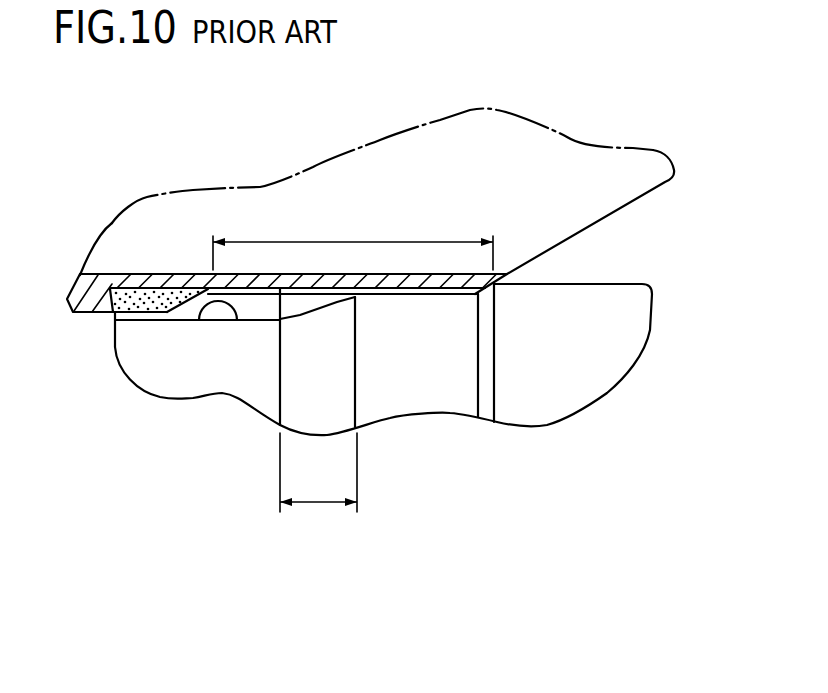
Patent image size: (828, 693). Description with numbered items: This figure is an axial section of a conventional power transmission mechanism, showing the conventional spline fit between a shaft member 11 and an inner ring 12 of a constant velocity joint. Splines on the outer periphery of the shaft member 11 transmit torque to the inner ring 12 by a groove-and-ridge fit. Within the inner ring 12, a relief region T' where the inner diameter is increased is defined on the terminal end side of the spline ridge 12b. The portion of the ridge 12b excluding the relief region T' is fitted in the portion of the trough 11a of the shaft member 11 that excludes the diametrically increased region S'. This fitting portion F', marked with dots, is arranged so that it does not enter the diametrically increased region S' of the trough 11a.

The shaft member 11 is at (643, 372).
The trough 11a is at (200, 308).
The inner ring 12 is at (368, 232).
The spline ridge 12b is at (77, 313).
The fitting portion F' is at (159, 214).
The relief region T' is at (353, 236).
The diametrically increased region S' is at (318, 472).